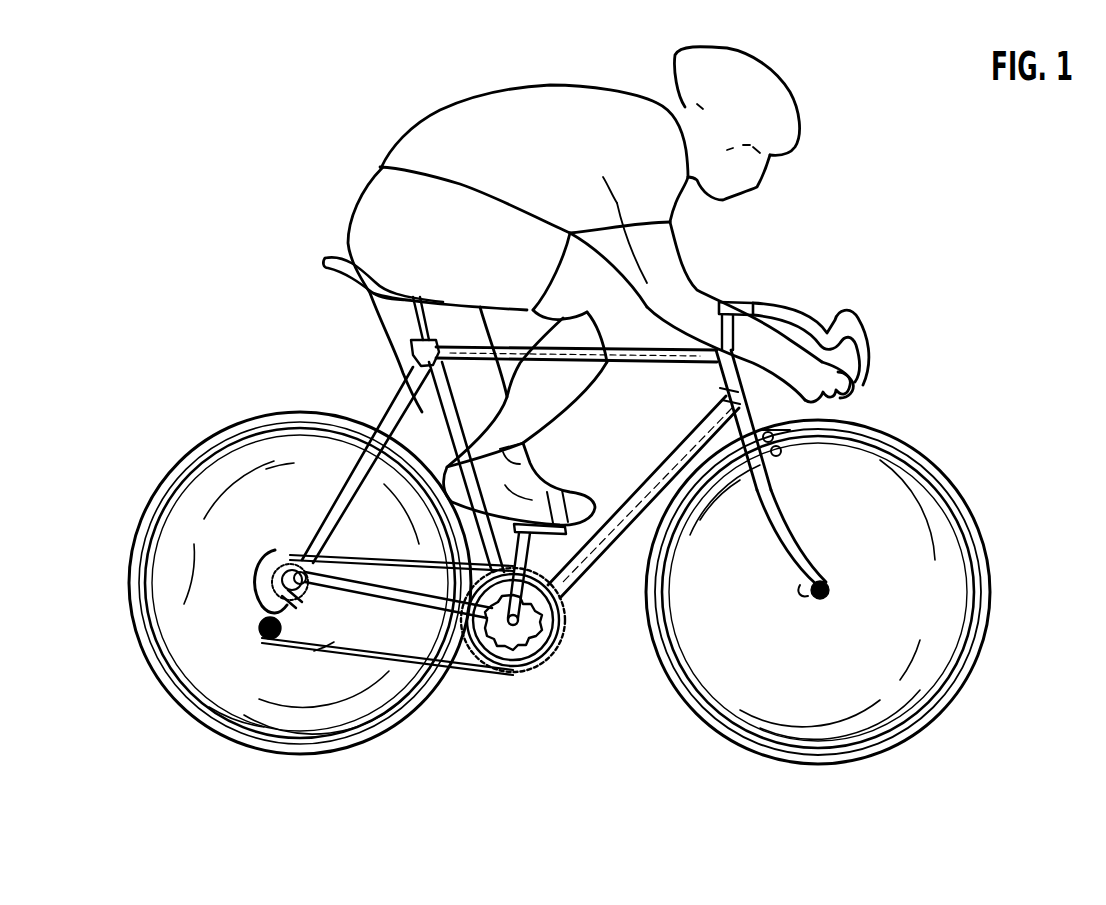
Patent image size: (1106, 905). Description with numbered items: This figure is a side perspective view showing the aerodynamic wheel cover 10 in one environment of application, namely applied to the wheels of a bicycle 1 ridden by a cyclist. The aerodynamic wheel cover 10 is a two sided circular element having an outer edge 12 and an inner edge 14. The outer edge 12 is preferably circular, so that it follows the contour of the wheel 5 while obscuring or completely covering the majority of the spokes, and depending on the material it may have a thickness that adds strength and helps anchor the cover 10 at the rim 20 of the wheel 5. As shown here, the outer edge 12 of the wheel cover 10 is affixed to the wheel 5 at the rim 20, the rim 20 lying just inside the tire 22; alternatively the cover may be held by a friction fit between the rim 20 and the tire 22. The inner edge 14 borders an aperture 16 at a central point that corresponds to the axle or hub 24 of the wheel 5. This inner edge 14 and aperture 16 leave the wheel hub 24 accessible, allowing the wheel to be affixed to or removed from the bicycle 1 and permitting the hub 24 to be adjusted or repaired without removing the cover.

The bicycle 1 is at (238, 313).
The wheel 5 is at (887, 422).
The aerodynamic wheel cover 10 is at (938, 560).
The outer edge 12 is at (972, 635).
The inner edge 14 is at (813, 600).
The aperture 16 is at (826, 585).
The rim 20 is at (900, 447).
The tire 22 is at (943, 477).
The hub 24 is at (805, 583).